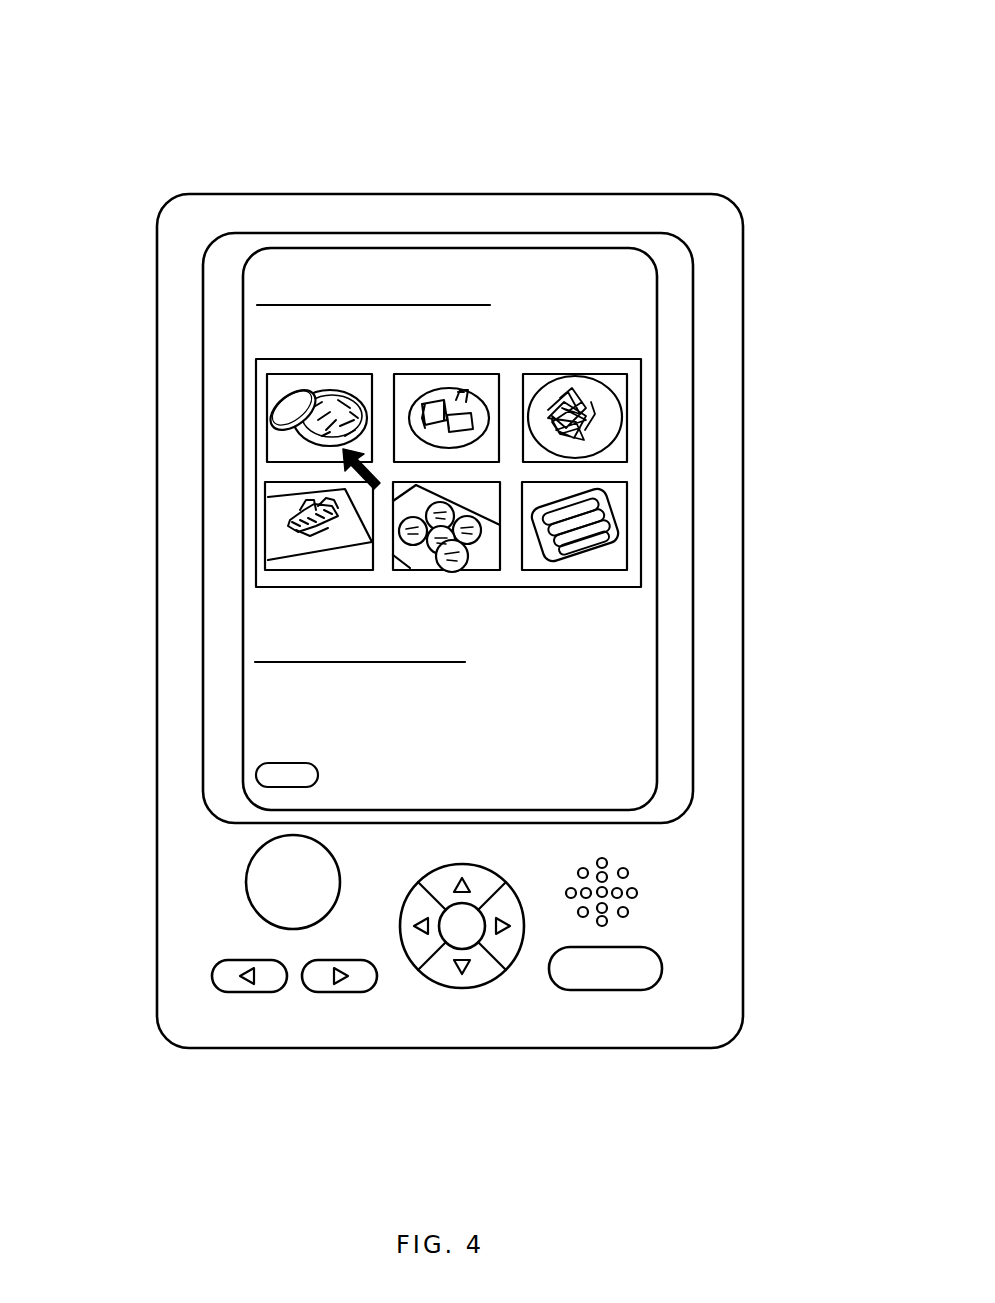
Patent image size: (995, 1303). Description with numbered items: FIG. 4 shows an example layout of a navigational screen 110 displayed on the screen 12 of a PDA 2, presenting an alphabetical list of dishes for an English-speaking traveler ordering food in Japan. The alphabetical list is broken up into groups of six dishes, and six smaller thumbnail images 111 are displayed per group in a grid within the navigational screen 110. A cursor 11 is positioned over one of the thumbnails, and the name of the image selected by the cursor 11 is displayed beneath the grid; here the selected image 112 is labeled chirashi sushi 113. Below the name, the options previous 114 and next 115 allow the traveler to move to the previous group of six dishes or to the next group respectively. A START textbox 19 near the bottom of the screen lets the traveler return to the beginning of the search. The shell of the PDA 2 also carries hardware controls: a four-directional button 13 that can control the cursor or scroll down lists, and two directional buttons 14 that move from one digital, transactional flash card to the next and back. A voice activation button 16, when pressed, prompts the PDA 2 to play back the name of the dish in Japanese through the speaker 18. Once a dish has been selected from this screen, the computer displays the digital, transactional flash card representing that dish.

The PDA 2 is at (538, 128).
The screen 12 is at (676, 268).
The navigational screen 110 is at (635, 342).
The thumbnail images 111 is at (625, 469).
The image 112 is at (270, 388).
The cursor 11 is at (270, 447).
The chirashi sushi 113 is at (245, 643).
The previous 114 is at (243, 687).
The next 115 is at (476, 689).
The START textbox 19 is at (256, 775).
The directional buttons 14 is at (212, 978).
The four-directional button 13 is at (473, 977).
The speaker 18 is at (635, 878).
The voice activation button 16 is at (660, 966).